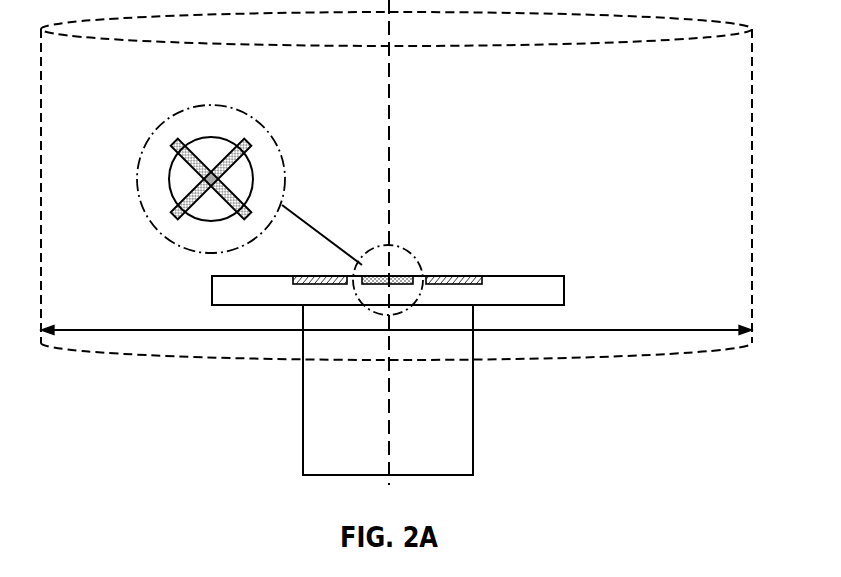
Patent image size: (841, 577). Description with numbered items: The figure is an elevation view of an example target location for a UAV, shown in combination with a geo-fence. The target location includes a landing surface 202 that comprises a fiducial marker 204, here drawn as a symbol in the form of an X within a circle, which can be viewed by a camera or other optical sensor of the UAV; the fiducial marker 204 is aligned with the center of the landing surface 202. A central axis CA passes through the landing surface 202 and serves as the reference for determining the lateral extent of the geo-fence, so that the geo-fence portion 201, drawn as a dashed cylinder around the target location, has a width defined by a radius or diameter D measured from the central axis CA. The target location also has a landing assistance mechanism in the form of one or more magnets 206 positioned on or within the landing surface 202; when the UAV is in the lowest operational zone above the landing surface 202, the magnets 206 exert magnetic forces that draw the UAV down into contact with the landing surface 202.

The geo-fence portion 201 is at (41, 108).
The landing surface 202 is at (423, 276).
The fiducial marker 204 is at (227, 140).
The magnets 206 is at (493, 276).
The central axis CA is at (390, 115).
The diameter D is at (120, 330).